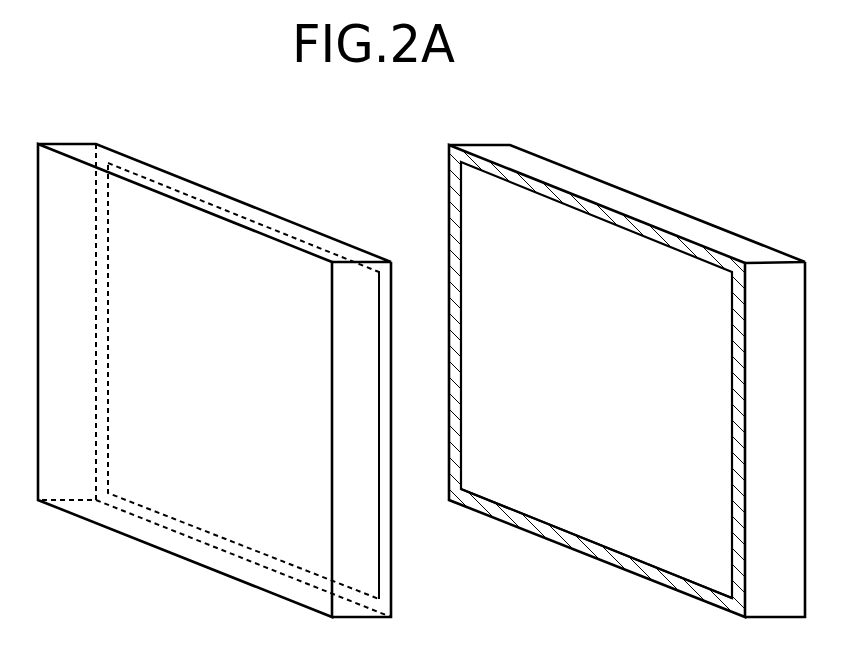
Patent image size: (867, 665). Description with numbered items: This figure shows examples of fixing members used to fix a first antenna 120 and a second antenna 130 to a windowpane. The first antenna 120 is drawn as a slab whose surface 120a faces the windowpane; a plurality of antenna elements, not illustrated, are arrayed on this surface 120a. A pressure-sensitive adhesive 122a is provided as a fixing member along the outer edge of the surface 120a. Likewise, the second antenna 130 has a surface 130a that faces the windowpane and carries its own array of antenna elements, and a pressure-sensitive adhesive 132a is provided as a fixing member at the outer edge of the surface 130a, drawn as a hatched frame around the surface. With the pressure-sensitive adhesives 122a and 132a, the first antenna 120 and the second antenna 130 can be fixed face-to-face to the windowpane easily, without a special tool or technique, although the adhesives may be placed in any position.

The first antenna 120 is at (245, 388).
The surface of the first antenna 120a is at (208, 237).
The pressure-sensitive adhesive 122a is at (386, 554).
The second antenna 130 is at (627, 332).
The surface of the second antenna 130a is at (470, 220).
The pressure-sensitive adhesive 132a is at (626, 560).